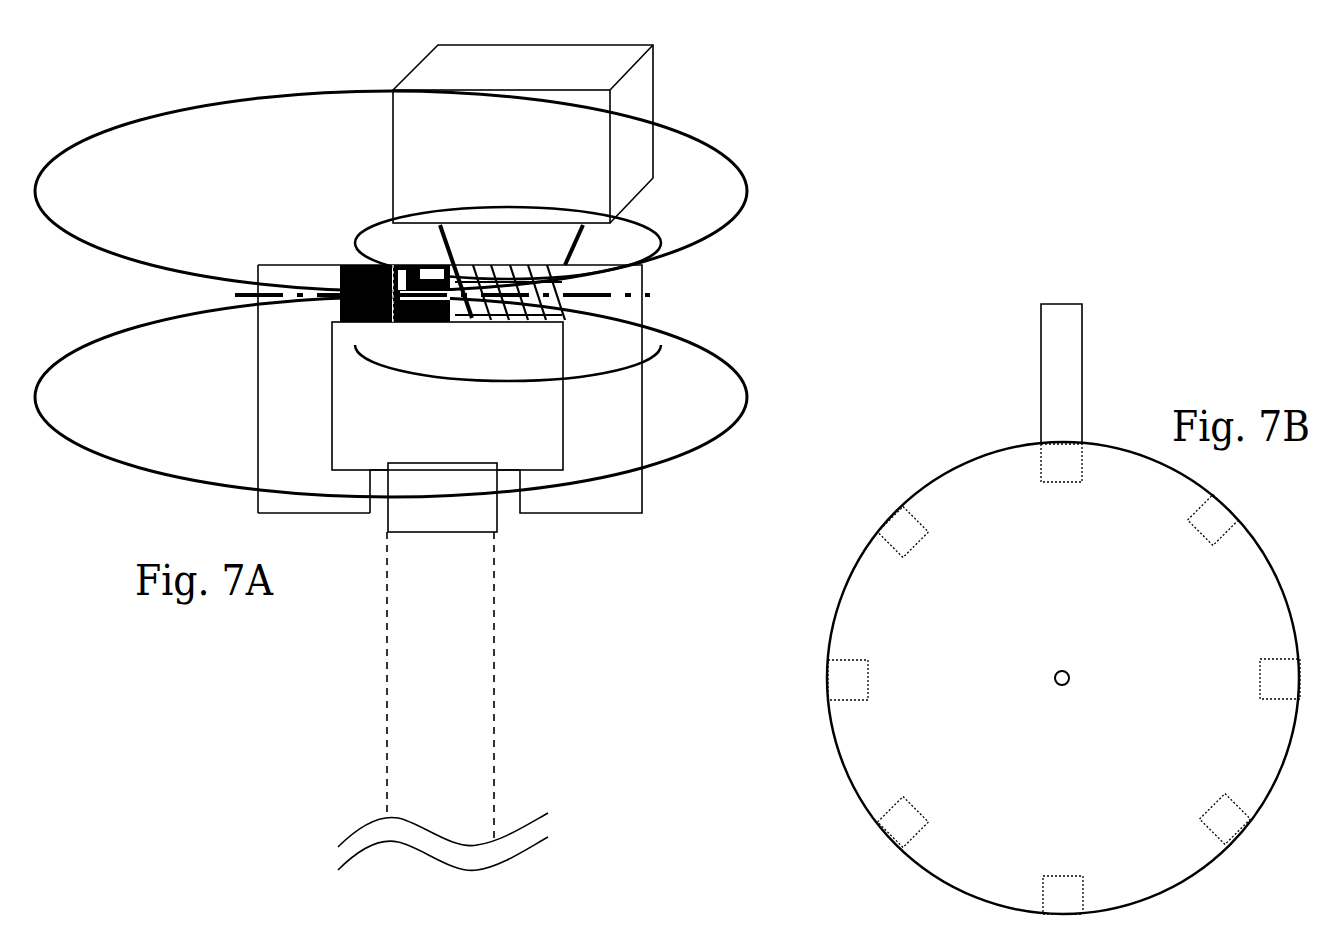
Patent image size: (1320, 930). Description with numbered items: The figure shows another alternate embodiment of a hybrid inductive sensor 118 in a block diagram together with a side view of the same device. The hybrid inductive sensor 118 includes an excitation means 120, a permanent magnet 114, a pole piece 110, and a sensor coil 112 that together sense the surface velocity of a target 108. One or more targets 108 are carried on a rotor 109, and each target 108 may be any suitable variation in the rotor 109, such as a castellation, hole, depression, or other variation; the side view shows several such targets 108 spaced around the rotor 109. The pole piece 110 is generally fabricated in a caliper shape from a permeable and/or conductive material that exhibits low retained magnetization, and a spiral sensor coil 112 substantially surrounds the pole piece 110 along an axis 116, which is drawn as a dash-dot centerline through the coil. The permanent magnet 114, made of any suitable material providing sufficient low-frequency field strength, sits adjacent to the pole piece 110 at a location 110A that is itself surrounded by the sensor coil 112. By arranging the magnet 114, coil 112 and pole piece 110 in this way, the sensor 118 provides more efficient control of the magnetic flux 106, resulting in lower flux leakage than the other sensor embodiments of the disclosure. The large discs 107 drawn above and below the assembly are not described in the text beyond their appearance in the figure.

In FIG. 7A, the magnetic flux 106 is at (569, 294).
In FIG. 7A, the lower disc 107 is at (441, 397).
In FIG. 7A, the target 108 is at (488, 510).
In FIG. 7B, the target 108 is at (1064, 704).
In FIG. 7A, the rotor 109 is at (463, 701).
In FIG. 7B, the rotor 109 is at (1102, 758).
In FIG. 7A, the pole piece 110 is at (500, 390).
In FIG. 7B, the pole piece 110 is at (1114, 393).
In FIG. 7A, the location 110A is at (447, 396).
In FIG. 7A, the sensor coil 112 is at (560, 315).
In FIG. 7A, the permanent magnet 114 is at (376, 238).
In FIG. 7A, the axis 116 is at (395, 288).
In FIG. 7A, the hybrid inductive sensor 118 is at (265, 389).
In FIG. 7A, the excitation means 120 is at (412, 168).